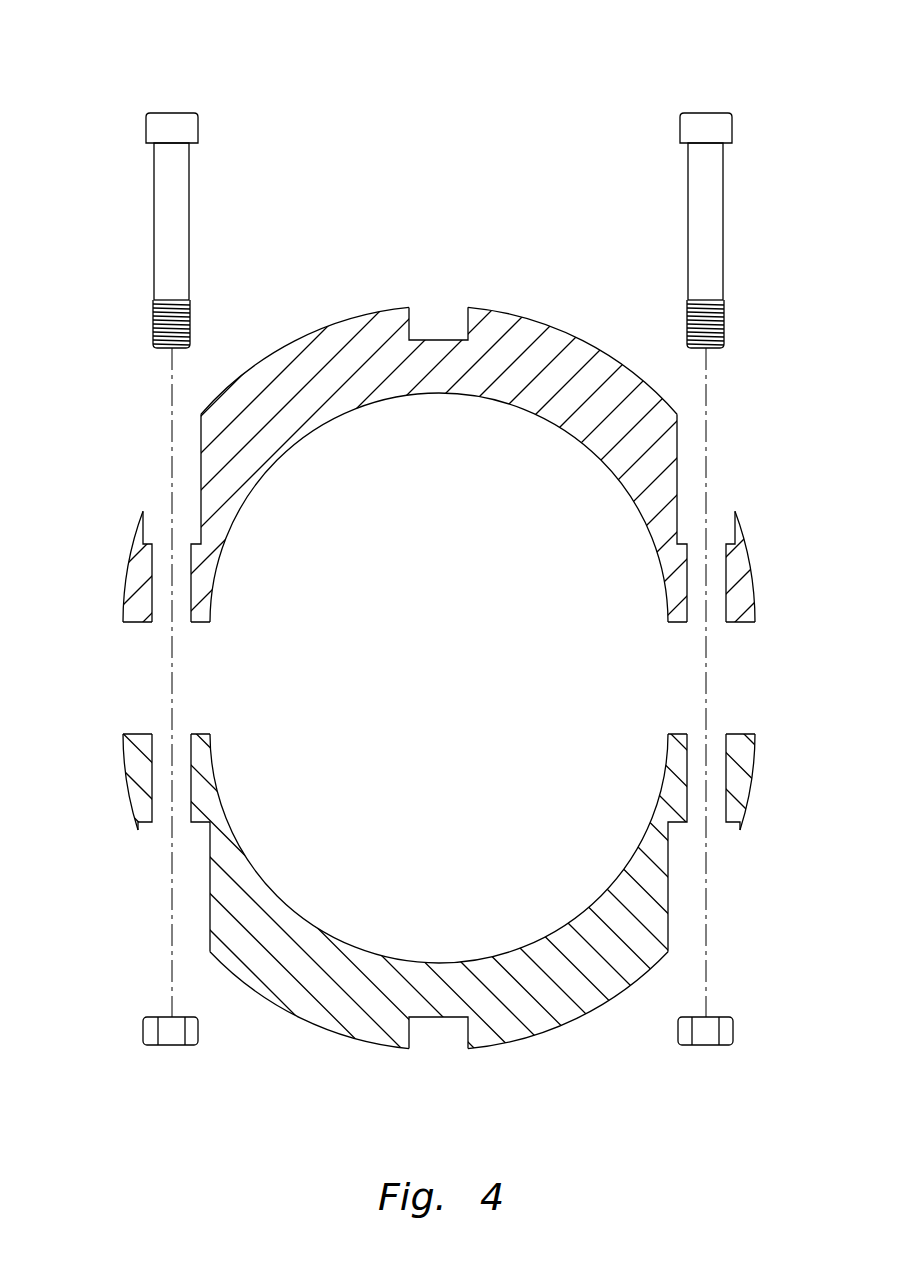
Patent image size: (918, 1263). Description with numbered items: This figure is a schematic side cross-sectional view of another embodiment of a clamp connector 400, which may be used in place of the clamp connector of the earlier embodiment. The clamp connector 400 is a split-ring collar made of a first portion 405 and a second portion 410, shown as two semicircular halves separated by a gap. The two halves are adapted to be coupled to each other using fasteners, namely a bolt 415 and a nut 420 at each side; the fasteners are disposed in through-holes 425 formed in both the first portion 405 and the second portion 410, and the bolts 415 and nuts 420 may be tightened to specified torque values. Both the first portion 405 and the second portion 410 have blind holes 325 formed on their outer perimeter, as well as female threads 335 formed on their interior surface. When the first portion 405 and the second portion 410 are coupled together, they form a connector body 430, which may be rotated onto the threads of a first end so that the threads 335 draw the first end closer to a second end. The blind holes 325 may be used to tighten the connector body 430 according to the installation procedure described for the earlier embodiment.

The clamp connector 400 is at (125, 33).
The first portion 405 is at (349, 320).
The second portion 410 is at (342, 1035).
The bolt 415 is at (153, 211).
The nut 420 is at (143, 1030).
The through-hole 425 is at (163, 595).
The connector body 430 is at (132, 885).
The blind hole 325 is at (437, 318).
The female threads 335 is at (430, 393).